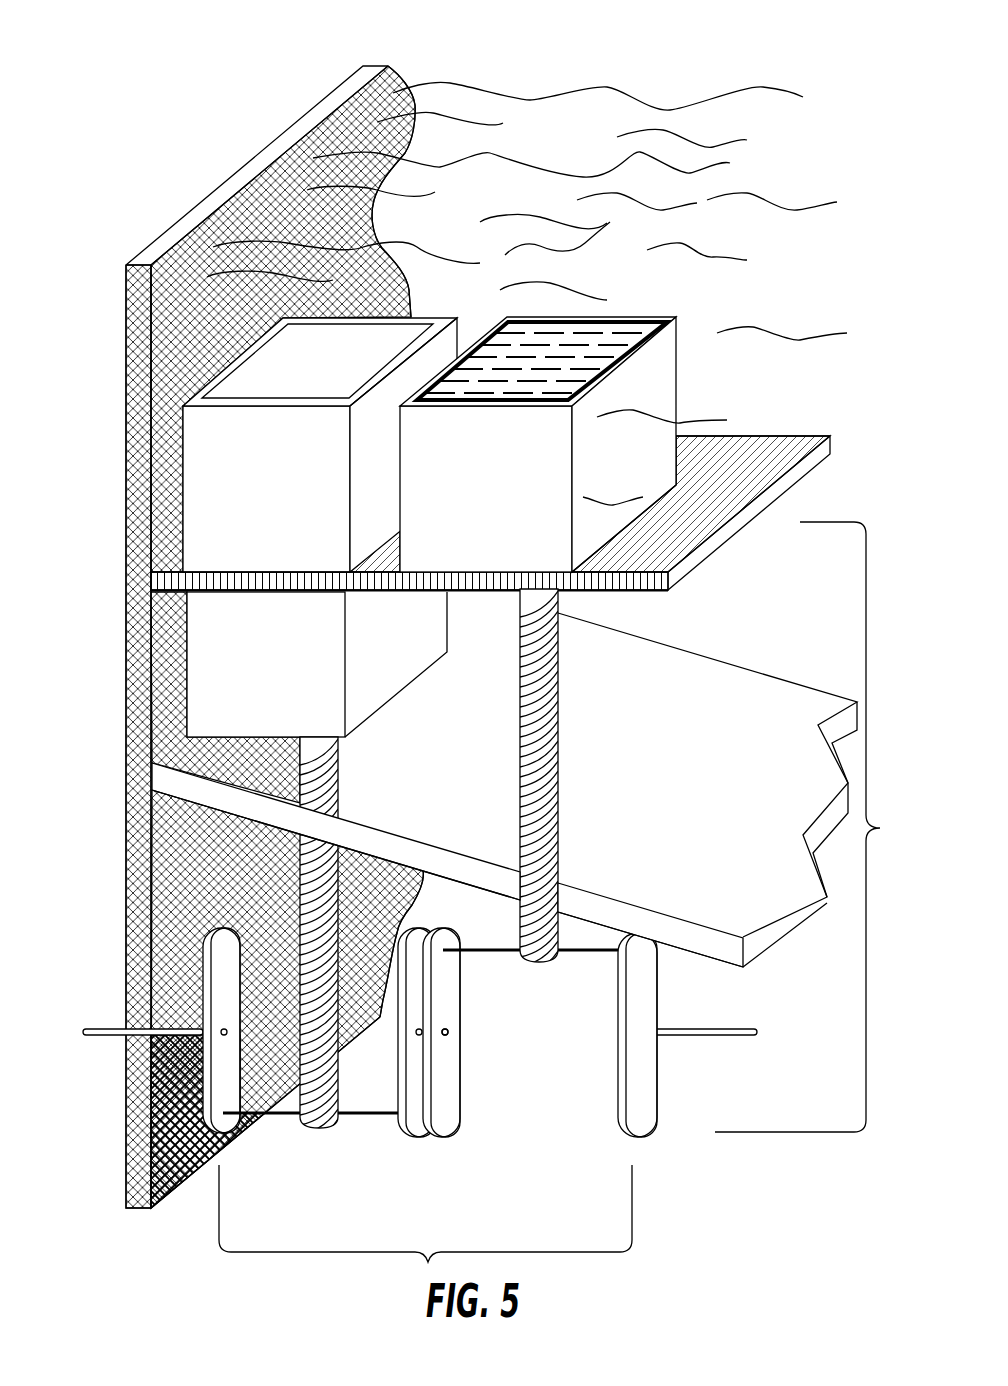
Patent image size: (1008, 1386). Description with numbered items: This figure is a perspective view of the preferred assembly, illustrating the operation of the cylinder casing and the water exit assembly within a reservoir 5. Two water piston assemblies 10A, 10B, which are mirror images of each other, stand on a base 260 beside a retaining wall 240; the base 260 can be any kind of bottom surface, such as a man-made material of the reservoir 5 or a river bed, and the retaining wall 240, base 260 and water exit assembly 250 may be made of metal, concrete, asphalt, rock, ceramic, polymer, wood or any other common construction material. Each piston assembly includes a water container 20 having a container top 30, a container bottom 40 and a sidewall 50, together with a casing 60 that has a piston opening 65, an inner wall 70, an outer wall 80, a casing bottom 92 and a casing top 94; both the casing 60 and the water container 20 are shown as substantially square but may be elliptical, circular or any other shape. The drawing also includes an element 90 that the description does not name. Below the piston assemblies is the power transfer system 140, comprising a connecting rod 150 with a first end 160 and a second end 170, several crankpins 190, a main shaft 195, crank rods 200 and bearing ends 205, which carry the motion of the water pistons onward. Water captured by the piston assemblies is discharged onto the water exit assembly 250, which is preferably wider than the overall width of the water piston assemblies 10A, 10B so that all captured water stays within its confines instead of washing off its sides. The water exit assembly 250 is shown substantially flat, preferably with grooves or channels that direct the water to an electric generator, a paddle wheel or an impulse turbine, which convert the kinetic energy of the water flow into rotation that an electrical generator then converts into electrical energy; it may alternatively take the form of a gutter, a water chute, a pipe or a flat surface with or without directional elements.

The reservoir 5 is at (567, 78).
The water piston assembly 10A is at (707, 305).
The water piston assembly 10B is at (581, 322).
The water container 20 is at (380, 690).
The container top 30 is at (318, 600).
The container bottom 40 is at (358, 740).
The sidewall 50 is at (412, 632).
The casing 60 is at (682, 377).
The piston opening 65 is at (295, 368).
The inner wall 70 is at (617, 330).
The outer wall 80 is at (253, 460).
The air gap 90 is at (362, 294).
The casing bottom 92 is at (441, 300).
The casing top 94 is at (550, 577).
The power transfer system 140 is at (815, 827).
The connecting rod 150 is at (558, 675).
The first end 160 is at (558, 640).
The second end 170 is at (317, 1120).
The crankpins 190 is at (398, 1115).
The main shaft 195 is at (448, 1032).
The crank rods 200 is at (217, 1120).
The bearing ends 205 is at (125, 1032).
The retaining wall 240 is at (165, 880).
The water exit assembly 250 is at (720, 883).
The base 260 is at (152, 580).